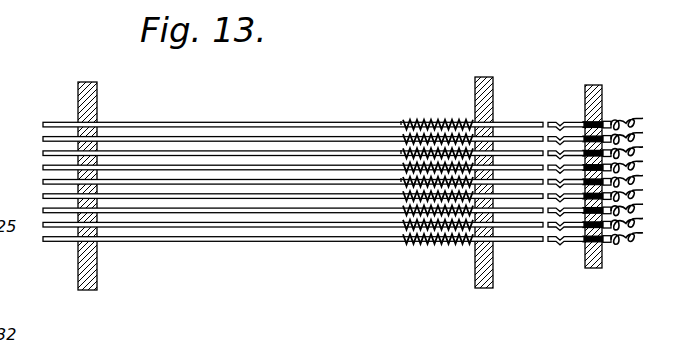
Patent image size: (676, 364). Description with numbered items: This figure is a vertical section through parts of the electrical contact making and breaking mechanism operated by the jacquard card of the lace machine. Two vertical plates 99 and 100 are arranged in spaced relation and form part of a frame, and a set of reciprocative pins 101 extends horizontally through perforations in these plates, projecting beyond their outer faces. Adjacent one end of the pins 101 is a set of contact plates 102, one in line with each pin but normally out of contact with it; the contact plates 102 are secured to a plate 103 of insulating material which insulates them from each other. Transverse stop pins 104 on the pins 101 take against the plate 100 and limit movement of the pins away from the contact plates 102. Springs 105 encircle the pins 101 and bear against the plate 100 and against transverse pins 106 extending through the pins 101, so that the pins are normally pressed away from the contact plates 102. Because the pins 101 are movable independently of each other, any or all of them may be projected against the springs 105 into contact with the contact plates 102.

The vertical plate 99 is at (97, 268).
The vertical plate 100 is at (476, 263).
The reciprocative pins 101 is at (188, 153).
The contact plates 102 is at (578, 152).
The plate of insulating material 103 is at (600, 100).
The transverse stop pins 104 is at (512, 155).
The springs 105 is at (440, 122).
The transverse pins 106 is at (402, 180).